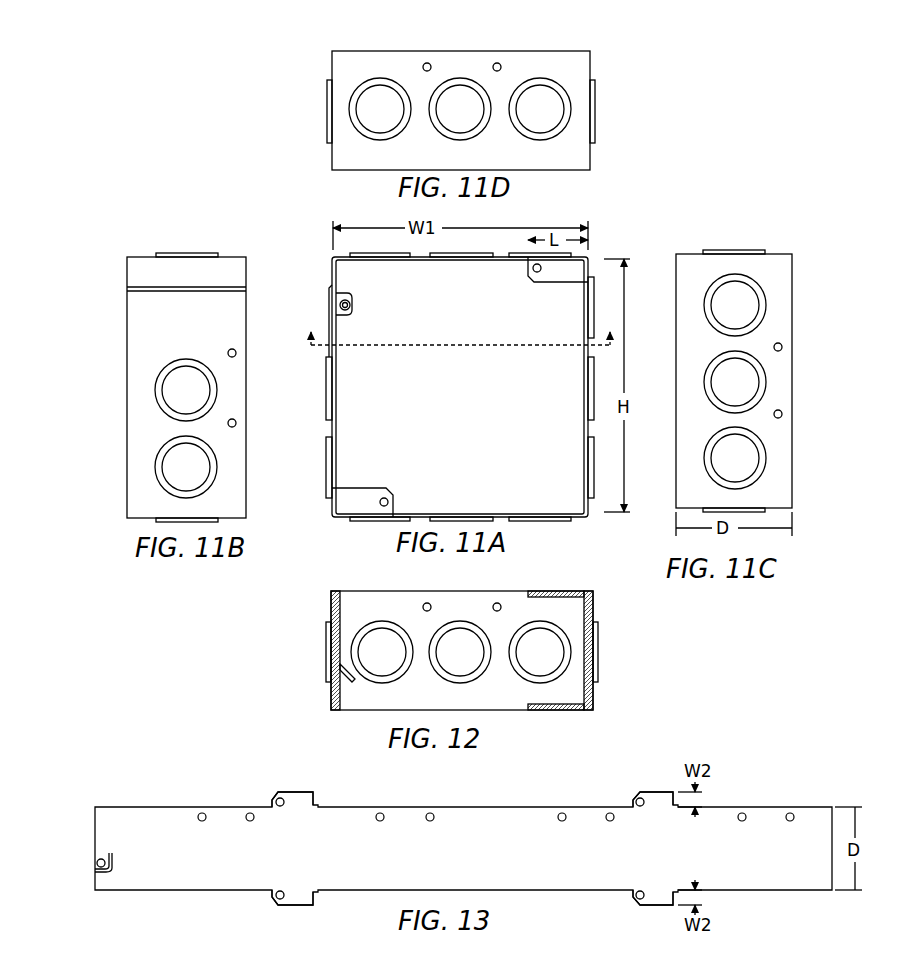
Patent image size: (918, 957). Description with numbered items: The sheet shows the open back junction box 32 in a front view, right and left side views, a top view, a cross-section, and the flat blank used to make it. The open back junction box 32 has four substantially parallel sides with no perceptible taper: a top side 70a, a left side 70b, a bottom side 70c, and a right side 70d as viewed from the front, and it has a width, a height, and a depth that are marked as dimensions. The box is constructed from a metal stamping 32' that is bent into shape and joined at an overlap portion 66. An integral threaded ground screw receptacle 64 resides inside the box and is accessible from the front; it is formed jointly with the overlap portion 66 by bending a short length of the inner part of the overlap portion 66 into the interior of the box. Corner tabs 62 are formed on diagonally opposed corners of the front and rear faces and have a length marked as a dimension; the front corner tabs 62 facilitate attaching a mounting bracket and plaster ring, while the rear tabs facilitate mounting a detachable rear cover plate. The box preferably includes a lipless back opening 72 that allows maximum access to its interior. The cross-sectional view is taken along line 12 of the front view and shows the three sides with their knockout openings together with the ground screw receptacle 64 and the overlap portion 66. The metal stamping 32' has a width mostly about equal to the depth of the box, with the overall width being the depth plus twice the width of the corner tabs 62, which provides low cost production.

In FIG. 11D, the open back junction box 32 is at (410, 98).
In FIG. 11B, the open back junction box 32 is at (186, 346).
In FIG. 11C, the open back junction box 32 is at (739, 334).
In FIG. 11A, the open back junction box 32 is at (434, 353).
In FIG. 12, the open back junction box 32 is at (408, 642).
In FIG. 13, the metal stamping 32' is at (463, 810).
In FIG. 11A, the section line 12- 12 is at (463, 326).
In FIG. 11A, the corner tabs 62 is at (563, 285).
In FIG. 12, the corner tabs 62 is at (553, 597).
In FIG. 13, the corner tabs 62 is at (294, 800).
In FIG. 11A, the integral threaded ground screw receptacle 64 is at (353, 305).
In FIG. 12, the integral threaded ground screw receptacle 64 is at (354, 683).
In FIG. 13, the integral threaded ground screw receptacle 64 is at (98, 858).
In FIG. 11A, the overlap portion 66 is at (329, 300).
In FIG. 12, the overlap portion 66 is at (329, 606).
In FIG. 11D, the top side 70a is at (460, 116).
In FIG. 11A, the top side 70a is at (433, 259).
In FIG. 11C, the left side 70b is at (728, 381).
In FIG. 11A, the left side 70b is at (587, 420).
In FIG. 11A, the bottom side 70c is at (499, 514).
In FIG. 12, the bottom side 70c is at (461, 639).
In FIG. 11B, the right side 70d is at (186, 405).
In FIG. 11A, the right side 70d is at (337, 426).
In FIG. 12, the lipless back opening 72 is at (376, 586).